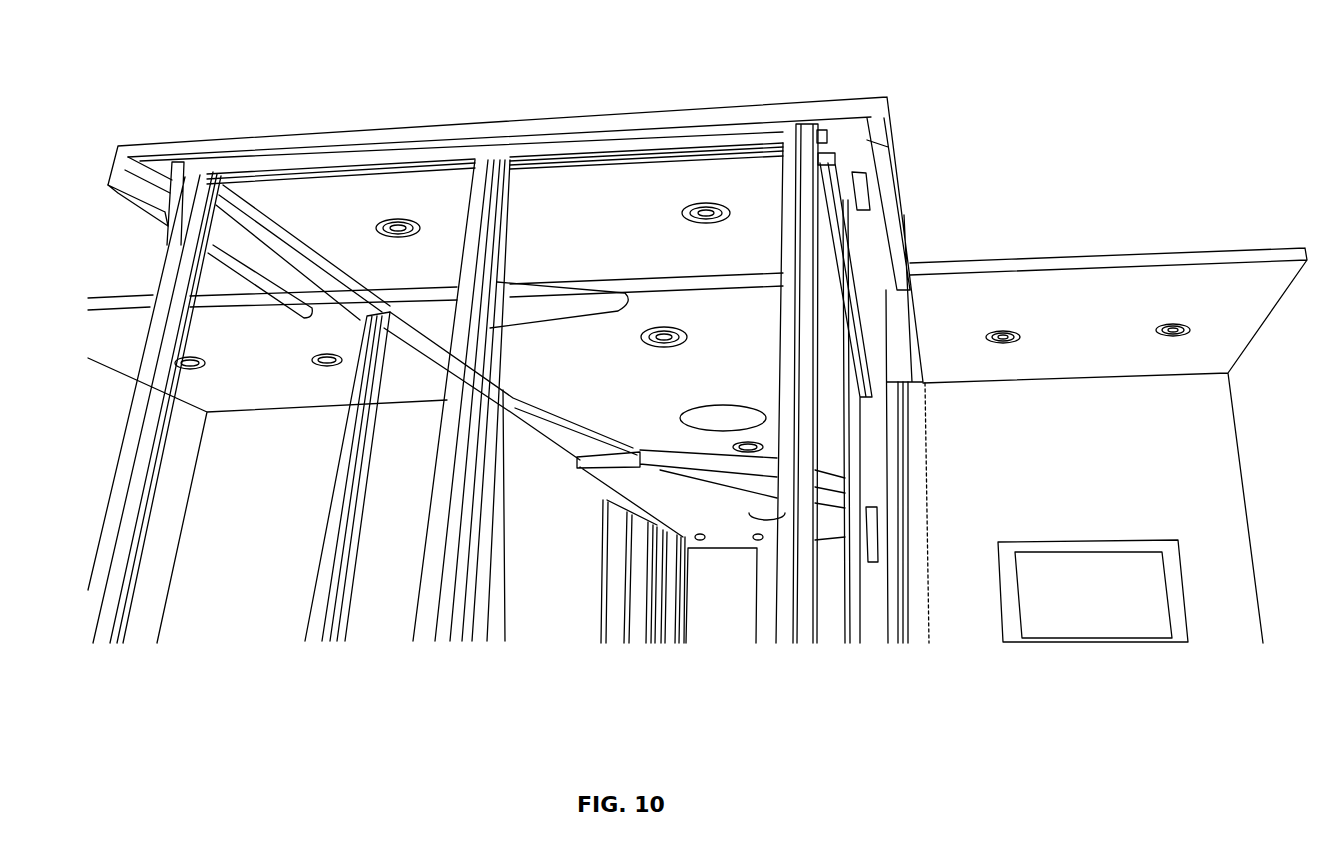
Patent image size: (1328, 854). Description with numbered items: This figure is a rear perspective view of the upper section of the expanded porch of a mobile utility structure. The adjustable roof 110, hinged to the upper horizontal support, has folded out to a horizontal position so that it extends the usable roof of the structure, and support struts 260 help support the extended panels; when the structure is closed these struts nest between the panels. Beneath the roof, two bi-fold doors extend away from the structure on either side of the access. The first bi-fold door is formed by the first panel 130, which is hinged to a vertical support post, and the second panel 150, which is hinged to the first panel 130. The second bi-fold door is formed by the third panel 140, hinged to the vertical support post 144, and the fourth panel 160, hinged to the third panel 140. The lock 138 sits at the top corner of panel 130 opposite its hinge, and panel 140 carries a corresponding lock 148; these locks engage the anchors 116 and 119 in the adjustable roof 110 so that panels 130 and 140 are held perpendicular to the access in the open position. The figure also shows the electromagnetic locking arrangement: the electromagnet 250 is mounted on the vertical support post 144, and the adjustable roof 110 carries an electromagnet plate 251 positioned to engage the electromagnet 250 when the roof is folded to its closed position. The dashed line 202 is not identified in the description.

The adjustable roof 110 is at (653, 116).
The anchor 116 is at (174, 162).
The anchor 119 is at (822, 128).
The first panel 130 is at (290, 222).
The lock 138 is at (112, 178).
The third panel 140 is at (810, 263).
The vertical support post 144 is at (863, 357).
The lock 148 is at (825, 152).
The second panel 150 is at (290, 165).
The fourth panel 160 is at (521, 152).
The partition line 202 is at (932, 572).
The electromagnet 250 is at (875, 535).
The electromagnet plate 251 is at (862, 190).
The support struts 260 is at (840, 277).